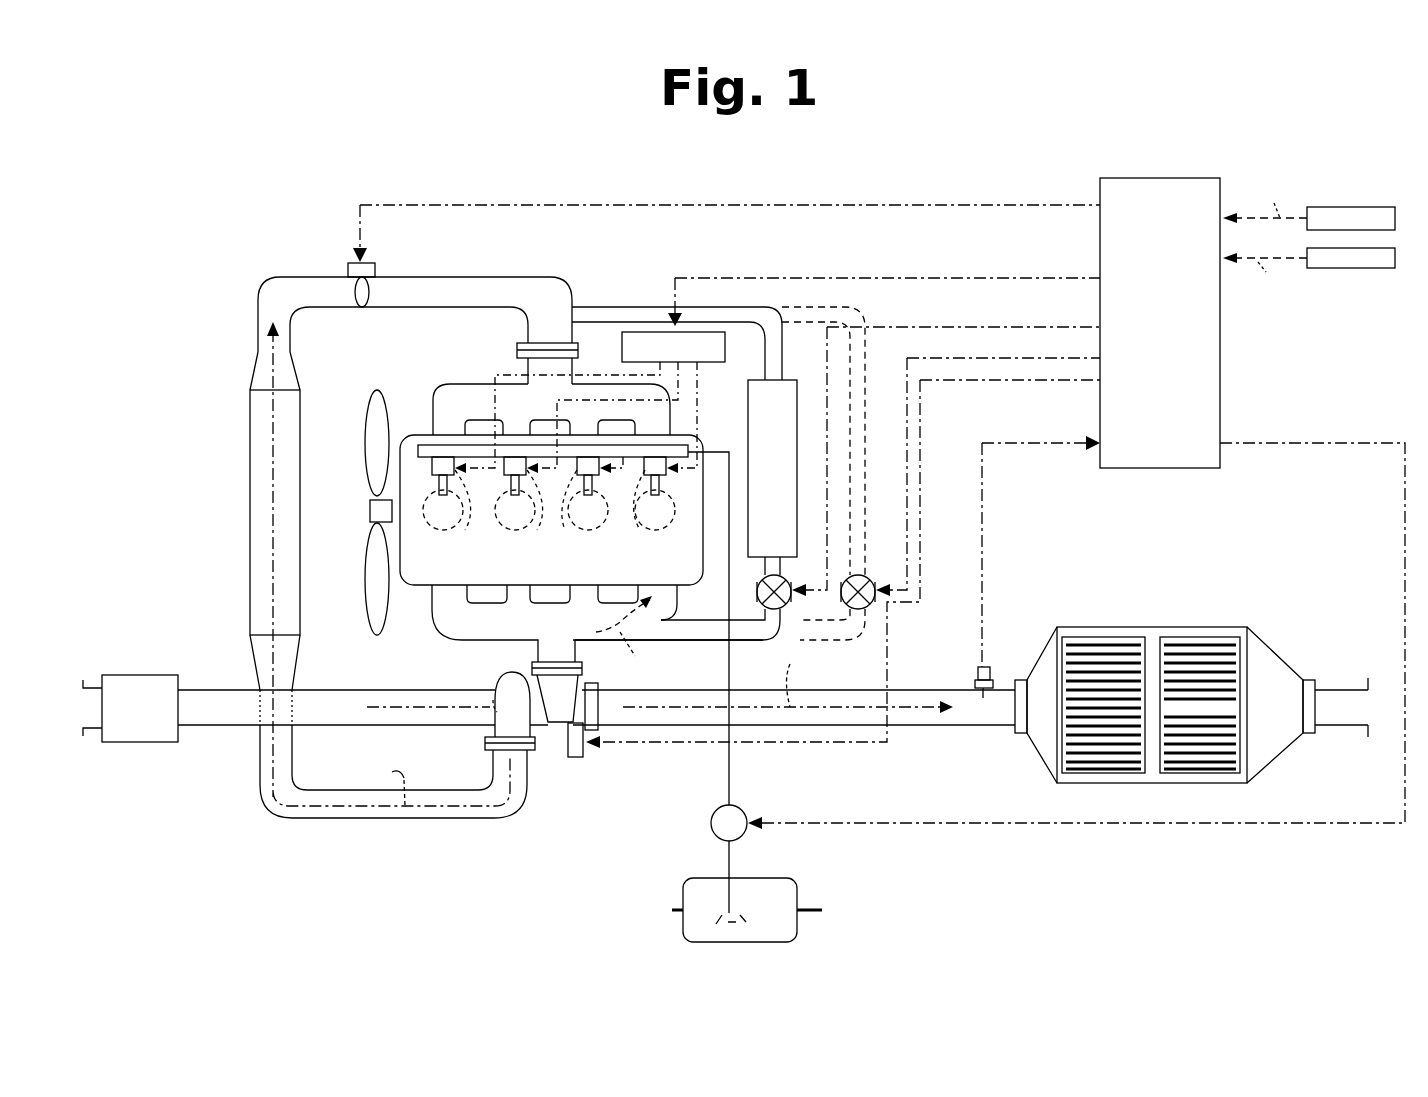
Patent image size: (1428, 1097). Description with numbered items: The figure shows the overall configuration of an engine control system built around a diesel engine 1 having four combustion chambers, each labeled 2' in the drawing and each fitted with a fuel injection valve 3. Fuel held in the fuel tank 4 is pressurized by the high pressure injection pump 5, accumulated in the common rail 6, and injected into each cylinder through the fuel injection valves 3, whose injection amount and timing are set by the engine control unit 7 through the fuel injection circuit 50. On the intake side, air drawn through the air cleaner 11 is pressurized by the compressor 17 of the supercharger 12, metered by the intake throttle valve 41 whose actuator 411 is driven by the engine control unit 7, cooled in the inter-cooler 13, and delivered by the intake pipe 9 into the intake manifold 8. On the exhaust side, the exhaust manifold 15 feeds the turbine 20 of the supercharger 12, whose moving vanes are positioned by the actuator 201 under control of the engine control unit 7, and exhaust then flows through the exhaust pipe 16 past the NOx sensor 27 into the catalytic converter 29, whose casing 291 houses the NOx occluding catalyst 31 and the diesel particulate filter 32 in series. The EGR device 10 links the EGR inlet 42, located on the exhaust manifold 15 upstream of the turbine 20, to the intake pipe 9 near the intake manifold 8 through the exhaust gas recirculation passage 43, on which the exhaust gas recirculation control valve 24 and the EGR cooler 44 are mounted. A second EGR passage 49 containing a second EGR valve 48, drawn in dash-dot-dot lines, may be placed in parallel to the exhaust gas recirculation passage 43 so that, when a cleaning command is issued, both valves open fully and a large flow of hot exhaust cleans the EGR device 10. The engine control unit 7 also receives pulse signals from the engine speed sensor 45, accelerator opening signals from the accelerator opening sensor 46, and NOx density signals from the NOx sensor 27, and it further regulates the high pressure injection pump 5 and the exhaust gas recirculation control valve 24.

The diesel engine 1 is at (580, 262).
The cylinder 2' is at (565, 522).
The fuel injection valve 3 is at (549, 515).
The fuel tank 4 is at (797, 878).
The high pressure injection pump 5 is at (748, 812).
The common rail 6 is at (418, 445).
The engine control unit 7 is at (1100, 180).
The intake manifold 8 is at (470, 385).
The intake pipe 9 is at (283, 278).
The EGR device 10 is at (716, 642).
The air cleaner 11 is at (166, 675).
The supercharger 12 is at (540, 770).
The inter-cooler 13 is at (258, 395).
The exhaust manifold 15 is at (460, 630).
The exhaust pipe 16 is at (862, 726).
The compressor 17 is at (492, 728).
The turbine 20 is at (583, 732).
The actuator 201 is at (590, 748).
The exhaust gas recirculation control valve 24 is at (758, 594).
The NOx sensor 27 is at (990, 672).
The catalytic converter 29 is at (1295, 628).
The casing 291 is at (1030, 745).
The NOx occluding catalyst 31 is at (1073, 637).
The diesel particulate filter 32 is at (1210, 637).
The intake throttle valve 41 is at (366, 310).
The actuator 411 is at (352, 263).
The EGR inlet 42 is at (628, 635).
The exhaust gas recirculation passage 43 is at (752, 307).
The EGR cooler 44 is at (748, 400).
The engine speed sensor 45 is at (1355, 200).
The accelerator opening sensor 46 is at (1358, 268).
The second EGR valve 48 is at (880, 622).
The second EGR passage 49 is at (857, 305).
The fuel injection circuit 50 is at (645, 340).